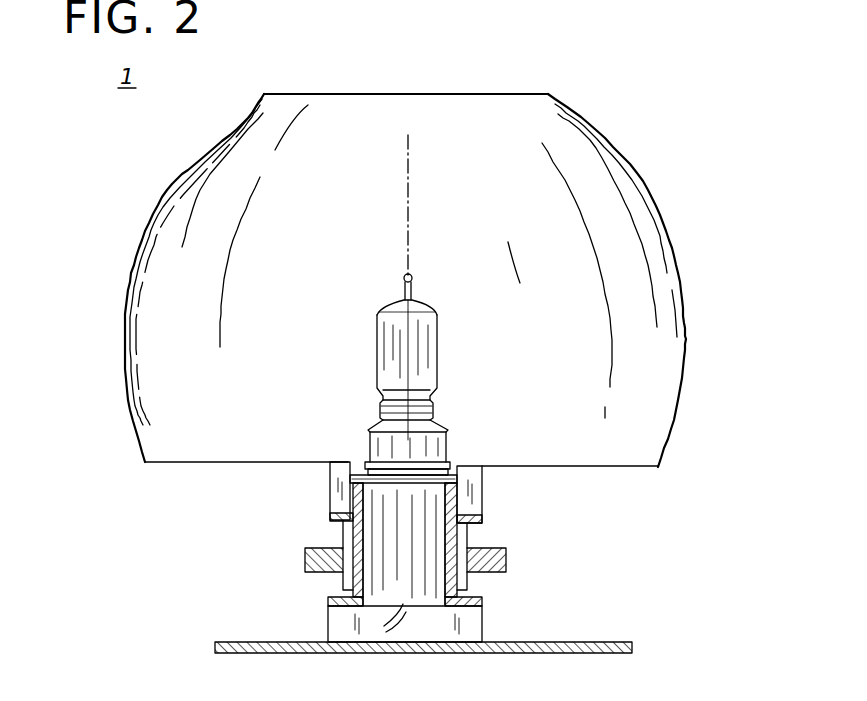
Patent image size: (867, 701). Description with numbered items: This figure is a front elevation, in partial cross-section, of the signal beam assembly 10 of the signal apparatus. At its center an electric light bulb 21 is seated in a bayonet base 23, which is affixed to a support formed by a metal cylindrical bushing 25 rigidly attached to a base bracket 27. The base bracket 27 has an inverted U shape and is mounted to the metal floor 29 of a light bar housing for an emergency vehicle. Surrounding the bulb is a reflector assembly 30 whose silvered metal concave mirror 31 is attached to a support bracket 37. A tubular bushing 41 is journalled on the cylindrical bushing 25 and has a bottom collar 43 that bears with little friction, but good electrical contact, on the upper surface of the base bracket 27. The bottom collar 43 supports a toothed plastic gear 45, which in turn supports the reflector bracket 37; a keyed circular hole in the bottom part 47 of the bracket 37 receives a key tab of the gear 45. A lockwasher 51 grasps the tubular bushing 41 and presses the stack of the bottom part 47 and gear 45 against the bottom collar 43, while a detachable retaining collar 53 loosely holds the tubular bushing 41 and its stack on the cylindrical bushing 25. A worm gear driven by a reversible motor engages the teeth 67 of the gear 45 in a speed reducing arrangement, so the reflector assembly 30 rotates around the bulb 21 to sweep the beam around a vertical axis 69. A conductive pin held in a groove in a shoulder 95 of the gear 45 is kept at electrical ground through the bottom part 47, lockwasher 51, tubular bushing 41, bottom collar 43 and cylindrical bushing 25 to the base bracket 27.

The signal beam assembly 10 is at (700, 300).
The electric light bulb 21 is at (437, 370).
The bayonet base 23 is at (432, 445).
The metal cylindrical bushing 25 is at (412, 585).
The base bracket 27 is at (328, 602).
The metal floor 29 is at (565, 653).
The reflector assembly 30 is at (143, 468).
The silvered metal concave mirror 31 is at (625, 205).
The support bracket 37 is at (484, 468).
The tubular bushing 41 is at (352, 542).
The bottom collar 43 is at (470, 596).
The toothed plastic gear 45 is at (305, 557).
The bottom part 47 is at (470, 520).
The lockwasher 51 is at (350, 514).
The detachable retaining collar 53 is at (357, 483).
The teeth 67 is at (506, 559).
The vertical axis 69 is at (408, 212).
The shoulder 95 is at (464, 538).